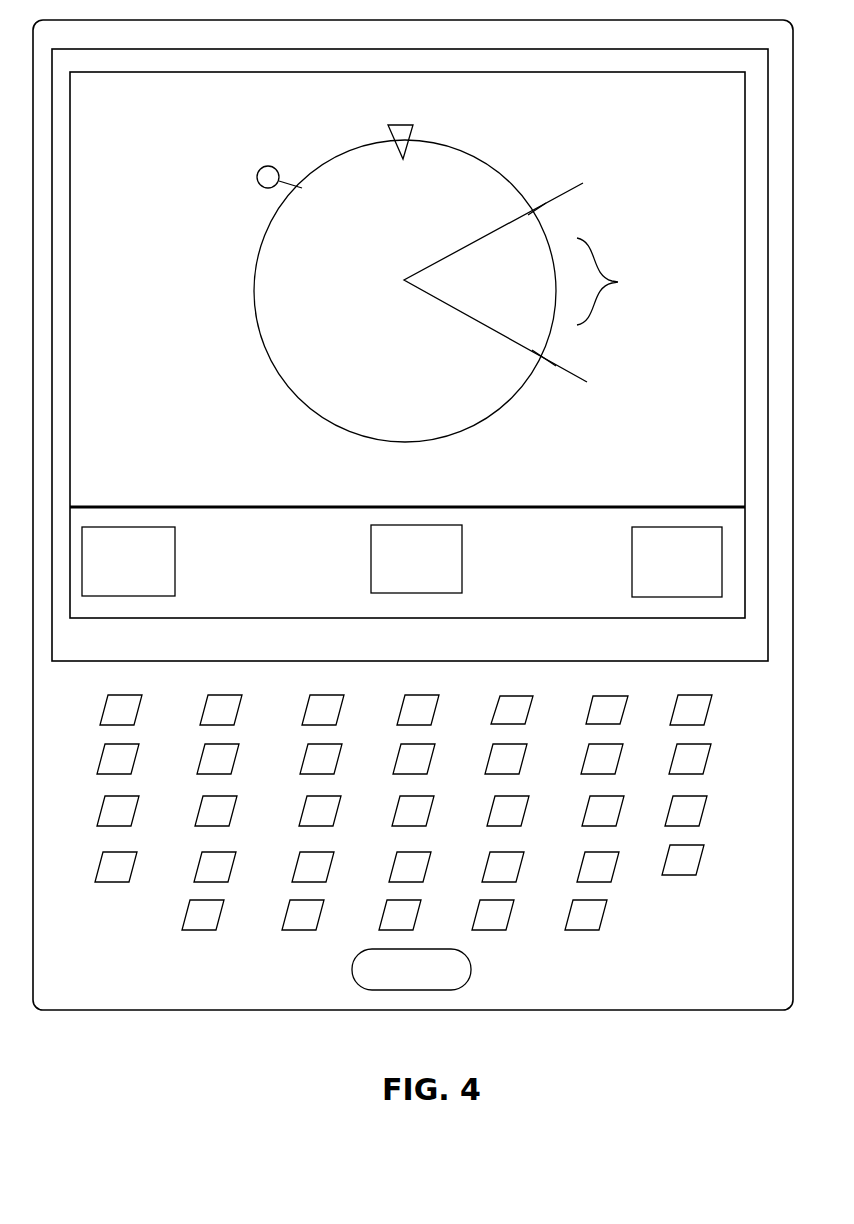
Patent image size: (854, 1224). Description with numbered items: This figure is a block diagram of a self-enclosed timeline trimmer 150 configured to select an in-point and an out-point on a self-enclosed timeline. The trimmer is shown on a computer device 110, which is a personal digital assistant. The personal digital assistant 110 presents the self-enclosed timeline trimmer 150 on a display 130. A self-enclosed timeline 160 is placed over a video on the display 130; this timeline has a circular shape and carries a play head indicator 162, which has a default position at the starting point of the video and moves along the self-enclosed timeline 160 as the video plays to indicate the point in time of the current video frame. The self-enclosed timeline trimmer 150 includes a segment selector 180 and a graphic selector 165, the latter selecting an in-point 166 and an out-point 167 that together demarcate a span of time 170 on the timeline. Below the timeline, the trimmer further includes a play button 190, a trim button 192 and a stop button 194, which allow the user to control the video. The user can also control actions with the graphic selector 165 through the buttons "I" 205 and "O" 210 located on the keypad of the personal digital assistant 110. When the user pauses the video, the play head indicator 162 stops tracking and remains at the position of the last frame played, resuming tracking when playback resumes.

The computer device 110 is at (413, 531).
The display 130 is at (124, 661).
The self-enclosed timeline trimmer 150 is at (242, 620).
The self-enclosed timeline 160 is at (263, 348).
The play head indicator 162 is at (388, 126).
The graphic selector 165 is at (470, 246).
The in-point 166 is at (538, 209).
The out-point 167 is at (548, 359).
The span of time 170 is at (618, 281).
The segment selector 180 is at (257, 183).
The play button 190 is at (175, 543).
The trim button 192 is at (462, 543).
The stop button 194 is at (632, 582).
The button "I" 205 is at (498, 703).
The button "O" 210 is at (592, 700).